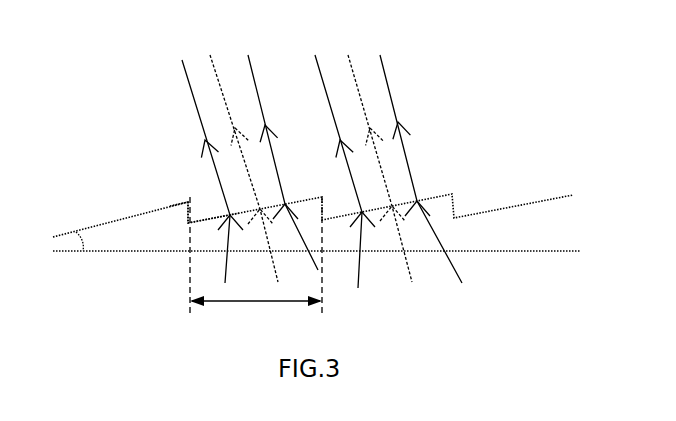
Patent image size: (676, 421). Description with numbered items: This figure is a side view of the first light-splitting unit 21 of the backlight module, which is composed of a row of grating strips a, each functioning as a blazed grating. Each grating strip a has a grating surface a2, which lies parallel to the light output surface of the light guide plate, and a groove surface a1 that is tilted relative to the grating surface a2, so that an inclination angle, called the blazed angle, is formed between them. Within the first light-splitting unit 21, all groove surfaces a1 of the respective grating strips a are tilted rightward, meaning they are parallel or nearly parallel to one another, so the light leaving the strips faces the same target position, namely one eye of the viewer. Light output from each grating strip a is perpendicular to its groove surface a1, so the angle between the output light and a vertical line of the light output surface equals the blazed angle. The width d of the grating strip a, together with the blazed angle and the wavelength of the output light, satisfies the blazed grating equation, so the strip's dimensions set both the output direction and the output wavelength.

The first light-splitting unit 21 is at (85, 85).
The grating strip a is at (186, 203).
The groove surface a1 is at (90, 223).
The grating surface a2 is at (107, 257).
The width of the grating strip d is at (256, 259).